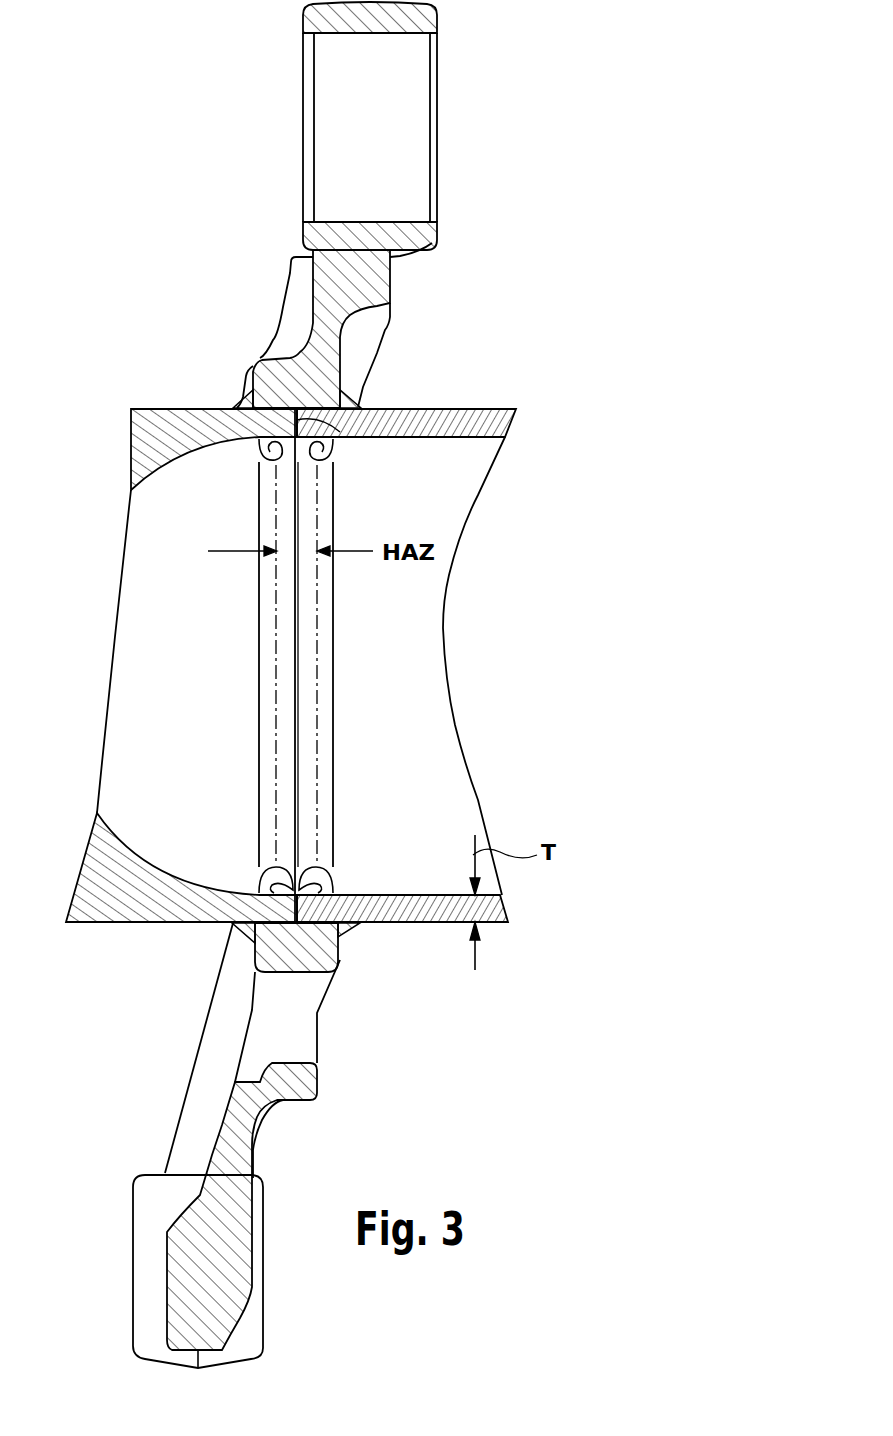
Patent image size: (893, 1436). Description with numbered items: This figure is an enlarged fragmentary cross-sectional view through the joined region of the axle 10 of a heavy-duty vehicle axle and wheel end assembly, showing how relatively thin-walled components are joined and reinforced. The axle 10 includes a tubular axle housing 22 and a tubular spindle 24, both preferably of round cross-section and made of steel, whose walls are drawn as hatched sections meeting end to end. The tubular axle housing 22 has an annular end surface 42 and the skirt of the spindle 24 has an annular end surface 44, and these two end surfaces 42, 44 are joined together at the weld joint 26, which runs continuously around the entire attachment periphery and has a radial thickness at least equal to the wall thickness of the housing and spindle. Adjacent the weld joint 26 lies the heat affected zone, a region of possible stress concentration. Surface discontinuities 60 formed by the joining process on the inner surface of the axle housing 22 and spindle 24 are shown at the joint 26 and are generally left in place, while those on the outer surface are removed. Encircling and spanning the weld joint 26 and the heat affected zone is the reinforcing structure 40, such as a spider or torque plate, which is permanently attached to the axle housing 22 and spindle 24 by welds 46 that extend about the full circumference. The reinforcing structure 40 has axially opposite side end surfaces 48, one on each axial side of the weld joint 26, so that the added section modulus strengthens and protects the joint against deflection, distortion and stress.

The axle 10 is at (403, 922).
The tubular axle housing 22 is at (450, 420).
The tubular spindle 24 is at (170, 430).
The weld joint 26 is at (297, 797).
The reinforcing structure 40 is at (392, 283).
The annular end surface 42 is at (290, 910).
The annular end surface 44 is at (330, 432).
The welds 46 is at (238, 397).
The side end surfaces 48 is at (240, 355).
The surface discontinuities 60 is at (262, 456).